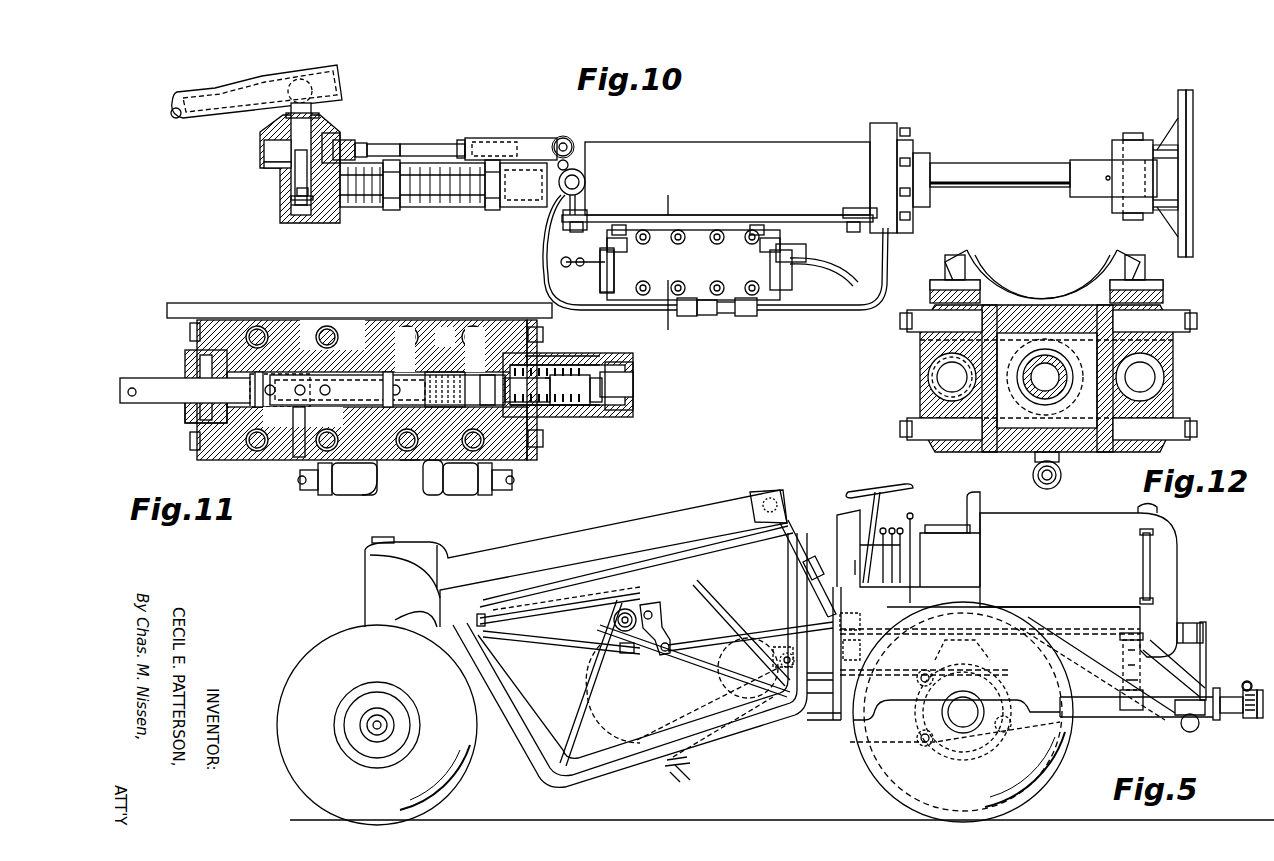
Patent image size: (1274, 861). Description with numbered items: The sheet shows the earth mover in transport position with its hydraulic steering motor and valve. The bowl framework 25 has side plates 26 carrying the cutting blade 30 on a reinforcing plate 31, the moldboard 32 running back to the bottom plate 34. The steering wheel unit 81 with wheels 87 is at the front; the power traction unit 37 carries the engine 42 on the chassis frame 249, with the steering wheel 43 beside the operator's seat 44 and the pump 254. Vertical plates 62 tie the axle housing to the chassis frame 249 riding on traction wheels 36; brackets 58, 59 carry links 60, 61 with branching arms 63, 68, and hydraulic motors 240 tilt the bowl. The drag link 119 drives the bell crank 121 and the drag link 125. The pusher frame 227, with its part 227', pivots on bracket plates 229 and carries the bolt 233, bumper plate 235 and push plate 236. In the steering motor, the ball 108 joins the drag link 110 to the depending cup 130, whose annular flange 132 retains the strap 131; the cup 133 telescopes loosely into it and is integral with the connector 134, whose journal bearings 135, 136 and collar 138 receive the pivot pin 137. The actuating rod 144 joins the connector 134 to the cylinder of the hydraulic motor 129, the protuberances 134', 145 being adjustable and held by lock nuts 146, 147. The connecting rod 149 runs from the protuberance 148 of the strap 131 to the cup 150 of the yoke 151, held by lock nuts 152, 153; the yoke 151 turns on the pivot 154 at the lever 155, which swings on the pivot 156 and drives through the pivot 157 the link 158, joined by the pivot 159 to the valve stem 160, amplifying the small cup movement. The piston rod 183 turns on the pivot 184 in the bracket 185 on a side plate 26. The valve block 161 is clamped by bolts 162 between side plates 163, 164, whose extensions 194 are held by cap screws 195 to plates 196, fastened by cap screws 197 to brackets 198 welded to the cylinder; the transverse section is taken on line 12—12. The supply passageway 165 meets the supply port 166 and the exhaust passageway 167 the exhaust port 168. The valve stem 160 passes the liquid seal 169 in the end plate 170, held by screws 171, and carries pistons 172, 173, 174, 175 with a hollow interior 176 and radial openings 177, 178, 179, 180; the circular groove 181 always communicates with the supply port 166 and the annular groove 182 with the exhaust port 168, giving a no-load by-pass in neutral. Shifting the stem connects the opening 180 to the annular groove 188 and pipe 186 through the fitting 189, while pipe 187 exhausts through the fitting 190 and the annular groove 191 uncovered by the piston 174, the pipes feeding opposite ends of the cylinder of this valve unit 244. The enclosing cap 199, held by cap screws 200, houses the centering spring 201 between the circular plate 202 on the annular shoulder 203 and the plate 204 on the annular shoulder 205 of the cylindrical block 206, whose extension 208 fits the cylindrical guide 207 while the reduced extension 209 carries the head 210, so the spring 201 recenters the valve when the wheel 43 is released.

In FIG. 10, the drag link 110 is at (205, 100).
In FIG. 10, the ball 108 is at (292, 80).
In FIG. 10, the depending cup 130 is at (265, 140).
In FIG. 10, the cylindrical ring or strap 131 is at (264, 148).
In FIG. 10, the journal bearing 135 is at (280, 168).
In FIG. 10, the upright pivot pin 137 is at (300, 186).
In FIG. 10, the collar or ring 138 is at (282, 195).
In FIG. 10, the journal bearing 136 is at (280, 215).
In FIG. 10, the upwardly extending cup 133 is at (325, 140).
In FIG. 10, the annular flange 132 is at (330, 148).
In FIG. 10, the protuberance 148 is at (356, 142).
In FIG. 10, the lock nut 152 is at (378, 139).
In FIG. 10, the lock nut 147 is at (400, 144).
In FIG. 10, the connecting rod 149 is at (420, 144).
In FIG. 10, the connector 134 is at (345, 203).
In FIG. 10, the protuberance 134' is at (400, 202).
In FIG. 10, the actuating rod 144 is at (437, 190).
In FIG. 10, the lock nut 146 is at (492, 208).
In FIG. 10, the protuberance 145 is at (523, 195).
In FIG. 10, the lock nut 153 is at (468, 138).
In FIG. 10, the screw-threaded cup 150 is at (497, 138).
In FIG. 10, the bar or yoke 151 is at (545, 117).
In FIG. 10, the pivot 154 is at (570, 145).
In FIG. 10, the pivot 156 is at (568, 165).
In FIG. 10, the lever 155 is at (562, 228).
In FIG. 10, the hydraulic motor 129 is at (770, 144).
In FIG. 10, the plates 196 is at (712, 215).
In FIG. 12, the plates 196 is at (945, 292).
In FIG. 10, the valve stem 160 is at (590, 218).
In FIG. 11, the valve stem 160 is at (160, 382).
In FIG. 10, the cap screws 197 is at (584, 222).
In FIG. 10, the brackets 198 is at (590, 212).
In FIG. 12, the brackets 198 is at (960, 282).
In FIG. 10, the pivot 159 is at (589, 250).
In FIG. 11, the pivot 159 is at (132, 397).
In FIG. 10, the pivot 157 is at (562, 265).
In FIG. 10, the link 158 is at (599, 272).
In FIG. 10, the side plate 164 is at (693, 265).
In FIG. 12, the side plate 164 is at (1165, 368).
In FIG. 10, the bolts 162 is at (681, 230).
In FIG. 12, the bolts 162 is at (1190, 318).
In FIG. 11, the bolts 162 is at (257, 326).
In FIG. 10, the upper end extensions 194 is at (622, 226).
In FIG. 10, the cap screws 195 is at (628, 240).
In FIG. 10, the enclosing cap 199 is at (795, 244).
In FIG. 11, the enclosing cap 199 is at (612, 408).
In FIG. 10, the section line 12 is at (650, 205).
In FIG. 10, the pipe 187 is at (628, 312).
In FIG. 12, the pipe 187 is at (1062, 478).
In FIG. 11, the pipe 187 is at (300, 492).
In FIG. 10, the valve unit 244 is at (710, 320).
In FIG. 11, the valve unit 244 is at (405, 482).
In FIG. 10, the pipe 186 is at (795, 312).
In FIG. 11, the pipe 186 is at (510, 488).
In FIG. 10, the exhaust passageway 167 is at (853, 292).
In FIG. 12, the exhaust passageway 167 is at (1147, 378).
In FIG. 10, the piston rod 183 is at (973, 175).
In FIG. 10, the pivot 184 is at (1130, 133).
In FIG. 10, the side plates 26 is at (1185, 100).
In FIG. 5, the side plates 26 is at (576, 587).
In FIG. 10, the bracket 185 is at (1170, 213).
In FIG. 12, the valve block 161 is at (1010, 335).
In FIG. 11, the valve block 161 is at (362, 340).
In FIG. 12, the supply port 166 is at (990, 420).
In FIG. 12, the exhaust port 168 is at (1102, 400).
In FIG. 12, the tubular interior 176 is at (1045, 359).
In FIG. 11, the tubular interior 176 is at (381, 484).
In FIG. 12, the circular groove 181 is at (1048, 362).
In FIG. 11, the circular groove 181 is at (300, 460).
In FIG. 12, the annular groove 182 is at (1034, 377).
In FIG. 11, the annular groove 182 is at (433, 372).
In FIG. 12, the side plate 163 is at (950, 378).
In FIG. 12, the intake or supply passageway 165 is at (945, 386).
In FIG. 11, the piston 173 is at (358, 335).
In FIG. 11, the screws 171 is at (190, 330).
In FIG. 11, the end plate 170 is at (192, 365).
In FIG. 11, the liquid seal 169 is at (190, 425).
In FIG. 11, the radial opening 179 is at (380, 390).
In FIG. 11, the radial opening 177 is at (300, 385).
In FIG. 11, the annular groove 191 is at (390, 345).
In FIG. 11, the piston 174 is at (400, 345).
In FIG. 11, the annular groove 188 is at (442, 332).
In FIG. 11, the piston 175 is at (463, 332).
In FIG. 11, the piston 172 is at (285, 447).
In FIG. 11, the radial opening 178 is at (270, 454).
In FIG. 11, the fitting 190 is at (333, 498).
In FIG. 11, the radial opening 180 is at (437, 460).
In FIG. 11, the fitting 189 is at (458, 487).
In FIG. 11, the head 210 is at (605, 385).
In FIG. 11, the circular plate 202 is at (612, 400).
In FIG. 11, the spring 201 is at (580, 418).
In FIG. 11, the annular shoulder 203 is at (580, 360).
In FIG. 11, the cylindrical guide 207 is at (555, 358).
In FIG. 11, the cylindrical block 206 is at (495, 390).
In FIG. 11, the extension 208 is at (528, 390).
In FIG. 11, the annular shoulder 205 is at (542, 379).
In FIG. 11, the extension 209 is at (576, 390).
In FIG. 11, the cap screws 200 is at (545, 336).
In FIG. 11, the circular plate 204 is at (530, 452).
In FIG. 5, the ground engaging wheels 87 is at (315, 787).
In FIG. 5, the steering wheel unit 81 is at (348, 622).
In FIG. 5, the drag link 119 is at (527, 614).
In FIG. 5, the framework 25 is at (535, 780).
In FIG. 5, the bottom plate 34 is at (735, 690).
In FIG. 5, the receiving plate or moldboard 32 is at (700, 702).
In FIG. 5, the reinforcing plate 31 is at (688, 764).
In FIG. 5, the scraper or cutting blade 30 is at (674, 780).
In FIG. 5, the bell crank 121 is at (667, 630).
In FIG. 5, the drag link 125 is at (700, 640).
In FIG. 5, the branching arm 63 is at (820, 662).
In FIG. 5, the branching arm 68 is at (820, 713).
In FIG. 5, the extensible hydraulic motors 240 is at (828, 600).
In FIG. 5, the ground engaging traction wheels 36 is at (1045, 776).
In FIG. 5, the brackets 58 is at (925, 690).
In FIG. 5, the links 60 is at (920, 672).
In FIG. 5, the links 61 is at (905, 738).
In FIG. 5, the brackets 59 is at (935, 747).
In FIG. 5, the bracket plates 229 is at (1003, 734).
In FIG. 5, the vertical plates 62 is at (990, 652).
In FIG. 5, the chassis frame 249 is at (1058, 632).
In FIG. 5, the internal combustion engine 42 is at (1078, 581).
In FIG. 5, the power traction unit 37 is at (1012, 505).
In FIG. 5, the operator's seat 44 is at (937, 508).
In FIG. 5, the steering wheel 43 is at (875, 485).
In FIG. 5, the pusher frame 227 is at (1239, 682).
In FIG. 5, the bumper plate 235 is at (1206, 660).
In FIG. 5, the pump 254 is at (1192, 623).
In FIG. 5, the bolt 233 is at (1130, 712).
In FIG. 5, the hitch bar 227' is at (1136, 729).
In FIG. 5, the push plate 236 is at (1255, 718).